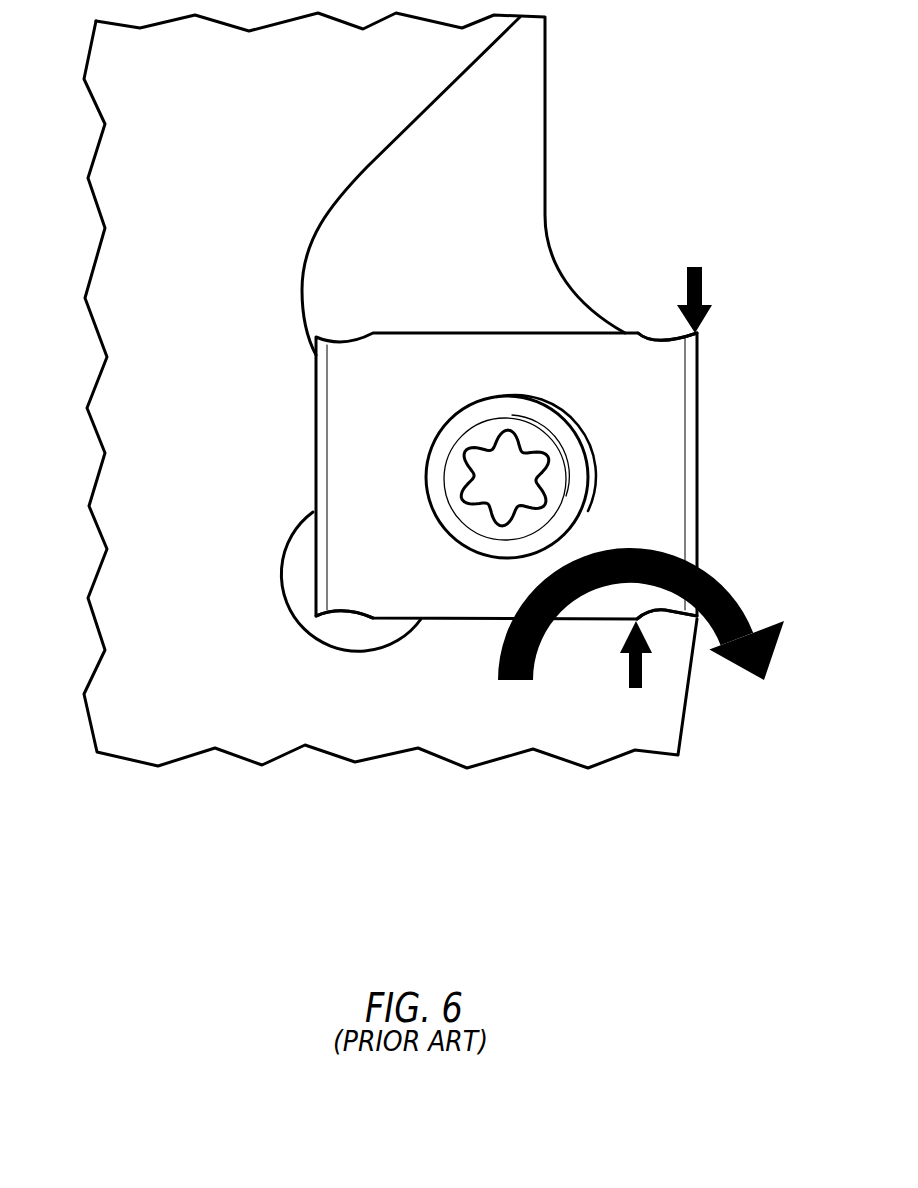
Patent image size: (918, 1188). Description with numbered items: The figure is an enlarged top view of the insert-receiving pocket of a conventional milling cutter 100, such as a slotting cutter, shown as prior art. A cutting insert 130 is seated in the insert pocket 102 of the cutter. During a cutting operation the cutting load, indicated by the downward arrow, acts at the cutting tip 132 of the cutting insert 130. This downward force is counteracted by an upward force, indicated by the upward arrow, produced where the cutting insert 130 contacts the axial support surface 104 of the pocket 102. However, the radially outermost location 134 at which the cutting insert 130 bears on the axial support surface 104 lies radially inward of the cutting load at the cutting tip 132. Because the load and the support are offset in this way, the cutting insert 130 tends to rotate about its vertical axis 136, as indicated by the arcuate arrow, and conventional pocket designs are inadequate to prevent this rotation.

The conventional milling cutter 100 is at (74, 239).
The insert pocket 102 is at (317, 556).
The axial support surface 104 is at (450, 611).
The cutting insert 130 is at (405, 604).
The cutting tip 132 is at (697, 333).
The radially outermost location 134 is at (641, 617).
The vertical axis 136 is at (503, 478).